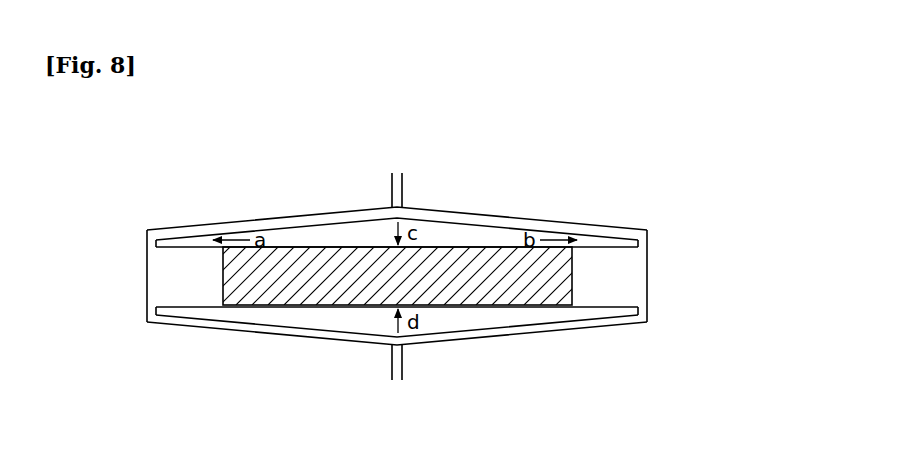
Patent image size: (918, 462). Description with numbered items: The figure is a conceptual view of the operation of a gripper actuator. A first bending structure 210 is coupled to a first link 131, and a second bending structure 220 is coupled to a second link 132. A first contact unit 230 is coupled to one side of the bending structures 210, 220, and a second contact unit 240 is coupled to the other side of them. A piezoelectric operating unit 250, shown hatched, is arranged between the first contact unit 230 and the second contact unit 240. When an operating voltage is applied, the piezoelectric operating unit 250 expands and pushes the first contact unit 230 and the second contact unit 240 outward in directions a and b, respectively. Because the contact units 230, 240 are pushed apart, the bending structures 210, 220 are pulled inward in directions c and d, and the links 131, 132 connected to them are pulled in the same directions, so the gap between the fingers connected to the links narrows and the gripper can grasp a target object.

The first link 131 is at (402, 190).
The second link 132 is at (402, 367).
The first bending structure 210 is at (553, 228).
The second bending structure 220 is at (553, 327).
The first contact unit 230 is at (158, 273).
The second contact unit 240 is at (633, 273).
The piezoelectric operating unit 250 is at (327, 268).